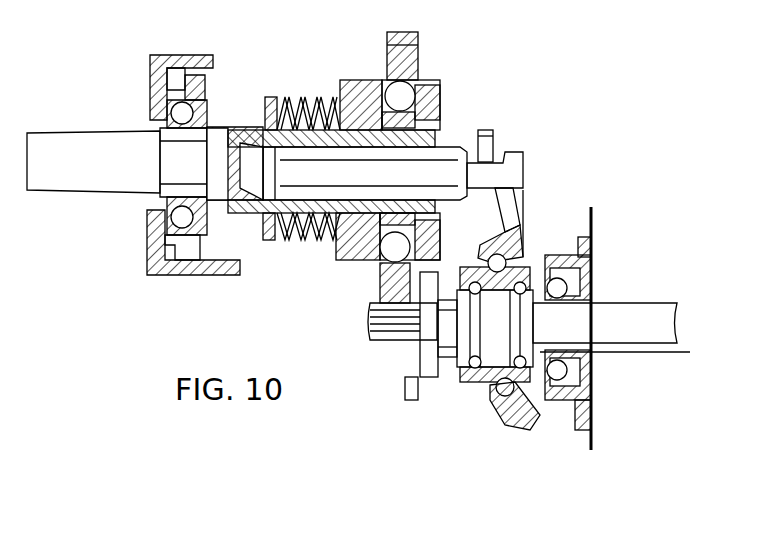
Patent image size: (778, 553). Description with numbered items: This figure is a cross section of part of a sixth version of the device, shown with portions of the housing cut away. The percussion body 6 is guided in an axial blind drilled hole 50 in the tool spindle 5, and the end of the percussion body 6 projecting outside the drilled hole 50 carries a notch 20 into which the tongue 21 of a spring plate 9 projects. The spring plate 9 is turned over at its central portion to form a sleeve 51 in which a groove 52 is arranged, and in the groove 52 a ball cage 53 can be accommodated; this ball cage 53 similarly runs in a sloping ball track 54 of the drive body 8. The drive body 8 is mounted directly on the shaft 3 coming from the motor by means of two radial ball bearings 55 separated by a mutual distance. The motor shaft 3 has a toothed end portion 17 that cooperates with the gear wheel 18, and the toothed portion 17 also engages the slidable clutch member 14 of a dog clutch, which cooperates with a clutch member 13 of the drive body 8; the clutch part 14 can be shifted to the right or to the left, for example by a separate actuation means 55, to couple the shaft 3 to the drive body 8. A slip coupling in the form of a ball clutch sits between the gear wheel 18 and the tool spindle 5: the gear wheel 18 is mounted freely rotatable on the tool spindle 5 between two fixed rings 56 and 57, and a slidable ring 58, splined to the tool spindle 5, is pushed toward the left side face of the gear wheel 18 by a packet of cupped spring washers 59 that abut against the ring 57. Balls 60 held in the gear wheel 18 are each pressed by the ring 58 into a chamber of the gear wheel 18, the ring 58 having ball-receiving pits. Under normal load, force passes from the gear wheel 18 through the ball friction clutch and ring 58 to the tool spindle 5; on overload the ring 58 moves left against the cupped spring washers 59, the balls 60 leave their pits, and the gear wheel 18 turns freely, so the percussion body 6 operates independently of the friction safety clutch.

The tool spindle 5 is at (220, 140).
The axial blind drilled hole 50 is at (250, 143).
The fixed ring 57 is at (270, 100).
The packet of cupped spring washers 59 is at (300, 100).
The slidable ring 58 is at (354, 80).
The gear wheel 18 is at (417, 42).
The fixed ring 56 is at (438, 112).
The percussion body 6 is at (450, 163).
The tongue 21 is at (490, 125).
The notch 20 is at (508, 160).
The spring plate 9 is at (525, 237).
The shaft 3 is at (628, 310).
The balls 60 is at (352, 258).
The toothed end portion 17 is at (365, 340).
The slidable clutch member 14 is at (422, 355).
The radial ball bearings / actuation means 55 is at (427, 407).
The sloping ball track 54 is at (462, 380).
The clutch member 13 is at (470, 380).
The drive body 8 is at (478, 382).
The ball cage 53 is at (487, 382).
The sleeve 51 is at (500, 390).
The groove 52 is at (515, 398).